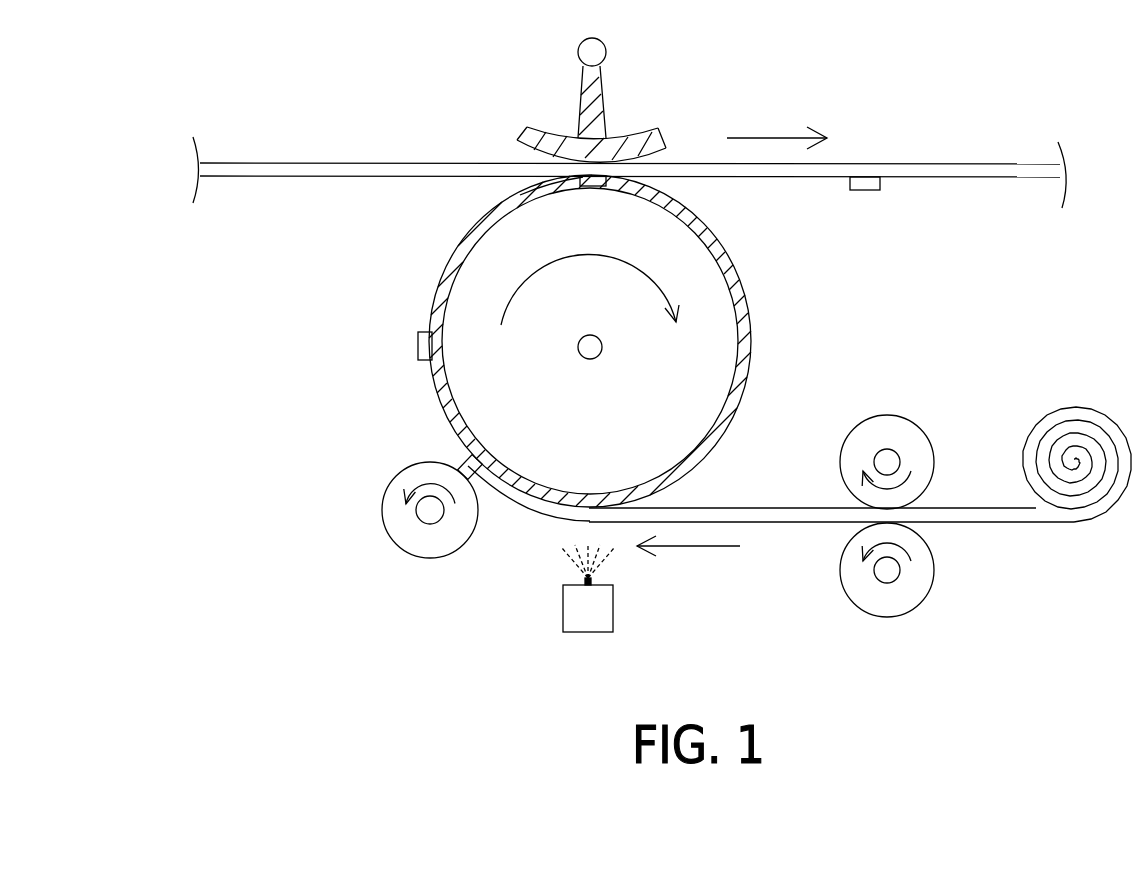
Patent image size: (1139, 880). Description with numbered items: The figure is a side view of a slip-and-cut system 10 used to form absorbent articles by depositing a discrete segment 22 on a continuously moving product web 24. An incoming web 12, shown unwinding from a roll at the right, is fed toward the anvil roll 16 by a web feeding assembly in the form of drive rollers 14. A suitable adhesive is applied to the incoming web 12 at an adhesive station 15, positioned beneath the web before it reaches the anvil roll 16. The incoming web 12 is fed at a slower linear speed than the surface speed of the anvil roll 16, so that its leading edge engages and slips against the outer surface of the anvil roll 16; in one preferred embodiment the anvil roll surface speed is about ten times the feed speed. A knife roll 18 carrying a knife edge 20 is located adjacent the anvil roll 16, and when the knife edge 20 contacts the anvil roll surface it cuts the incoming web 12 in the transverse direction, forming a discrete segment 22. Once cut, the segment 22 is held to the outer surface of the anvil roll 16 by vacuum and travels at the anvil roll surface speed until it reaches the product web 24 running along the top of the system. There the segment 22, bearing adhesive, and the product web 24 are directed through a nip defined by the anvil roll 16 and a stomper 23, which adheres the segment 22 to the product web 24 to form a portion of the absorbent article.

The slip-and-cut system 10 is at (264, 106).
The incoming web 12 is at (1092, 522).
The drive rollers 14 is at (929, 548).
The adhesive station 15 is at (578, 633).
The anvil roll 16 is at (752, 322).
The knife roll 18 is at (448, 558).
The knife edge 20 is at (462, 468).
The segment 22 is at (583, 182).
The stomper 23 is at (546, 128).
The product web 24 is at (350, 162).